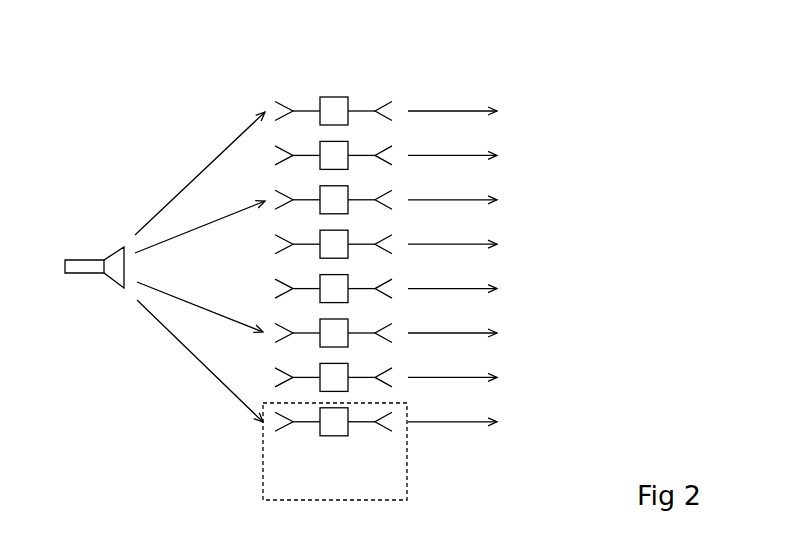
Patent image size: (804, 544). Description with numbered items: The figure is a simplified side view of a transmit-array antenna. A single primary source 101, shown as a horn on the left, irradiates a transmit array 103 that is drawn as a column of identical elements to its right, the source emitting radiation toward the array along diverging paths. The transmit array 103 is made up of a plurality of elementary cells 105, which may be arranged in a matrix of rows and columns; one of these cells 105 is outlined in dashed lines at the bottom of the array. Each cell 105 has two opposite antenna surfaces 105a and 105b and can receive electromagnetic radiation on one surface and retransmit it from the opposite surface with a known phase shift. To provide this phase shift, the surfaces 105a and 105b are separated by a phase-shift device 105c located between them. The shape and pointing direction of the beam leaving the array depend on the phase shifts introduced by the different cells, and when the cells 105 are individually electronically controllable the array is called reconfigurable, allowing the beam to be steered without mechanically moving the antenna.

The primary source 101 is at (82, 257).
The transmit array 103 is at (333, 90).
The elementary cell 105 is at (380, 451).
The antenna surface 105a is at (307, 425).
The antenna surface 105b is at (360, 425).
The phase-shift device 105c is at (332, 437).